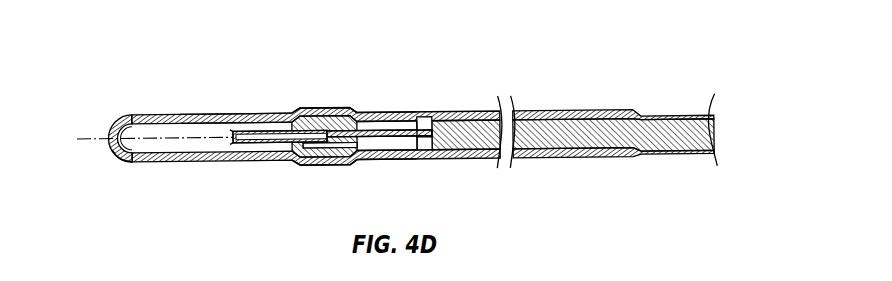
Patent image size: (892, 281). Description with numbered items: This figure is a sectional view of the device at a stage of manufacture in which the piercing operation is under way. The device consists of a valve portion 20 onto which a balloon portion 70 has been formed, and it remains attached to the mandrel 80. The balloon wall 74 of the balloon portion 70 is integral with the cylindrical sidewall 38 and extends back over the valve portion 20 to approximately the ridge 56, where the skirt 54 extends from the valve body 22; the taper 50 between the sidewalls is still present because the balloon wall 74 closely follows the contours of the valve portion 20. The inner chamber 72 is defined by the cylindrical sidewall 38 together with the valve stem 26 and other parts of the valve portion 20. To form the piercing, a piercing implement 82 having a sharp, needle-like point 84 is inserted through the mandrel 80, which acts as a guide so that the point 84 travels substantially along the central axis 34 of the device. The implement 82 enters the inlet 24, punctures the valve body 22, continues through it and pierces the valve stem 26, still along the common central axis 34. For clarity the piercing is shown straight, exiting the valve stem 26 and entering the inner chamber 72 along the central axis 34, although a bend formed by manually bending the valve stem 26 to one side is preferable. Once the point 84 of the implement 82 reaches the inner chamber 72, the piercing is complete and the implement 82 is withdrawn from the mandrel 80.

The central axis 34 is at (101, 137).
The balloon portion 70 is at (122, 108).
The cylindrical sidewall 38 is at (170, 114).
The balloon wall 74 is at (233, 114).
The inner chamber 72 is at (130, 161).
The point 84 is at (232, 146).
The valve stem 26 is at (288, 112).
The valve portion 20 is at (320, 116).
The ridge 56 is at (367, 113).
The skirt 54 is at (412, 111).
The taper 50 is at (298, 167).
The valve body 22 is at (333, 168).
The inlet 24 is at (352, 158).
The mandrel 80 is at (563, 110).
The piercing implement 82 is at (648, 122).